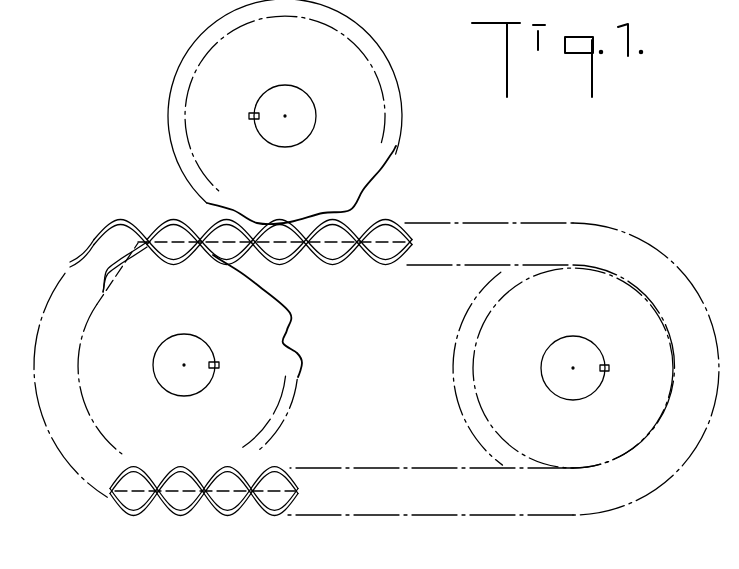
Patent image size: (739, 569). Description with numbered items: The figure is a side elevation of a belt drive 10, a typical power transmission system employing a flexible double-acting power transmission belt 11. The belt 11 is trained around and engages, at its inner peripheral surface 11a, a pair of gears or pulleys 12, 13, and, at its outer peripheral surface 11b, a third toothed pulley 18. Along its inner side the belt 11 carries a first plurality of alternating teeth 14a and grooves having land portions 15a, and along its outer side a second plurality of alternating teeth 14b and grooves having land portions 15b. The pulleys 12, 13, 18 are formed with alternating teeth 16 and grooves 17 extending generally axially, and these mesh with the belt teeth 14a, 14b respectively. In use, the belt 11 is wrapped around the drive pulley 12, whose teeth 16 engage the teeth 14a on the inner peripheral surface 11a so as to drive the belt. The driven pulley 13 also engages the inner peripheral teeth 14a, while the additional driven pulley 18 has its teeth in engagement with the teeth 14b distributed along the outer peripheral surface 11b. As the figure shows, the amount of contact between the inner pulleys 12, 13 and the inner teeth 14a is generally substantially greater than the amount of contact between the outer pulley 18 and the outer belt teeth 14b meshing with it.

The belt drive 10 is at (118, 138).
The double-acting power transmission belt 11 is at (553, 226).
The inner peripheral surface 11a is at (430, 265).
The outer peripheral surface 11b is at (493, 221).
The drive pulley 12 is at (202, 313).
The driven pulley 13 is at (589, 308).
The inner teeth 14a is at (333, 262).
The outer teeth 14b is at (127, 226).
The inner land portions 15a is at (362, 243).
The outer land portions 15b is at (103, 260).
The pulley teeth 16 is at (393, 163).
The pulley grooves 17 is at (370, 182).
The third toothed pulley 18 is at (300, 61).